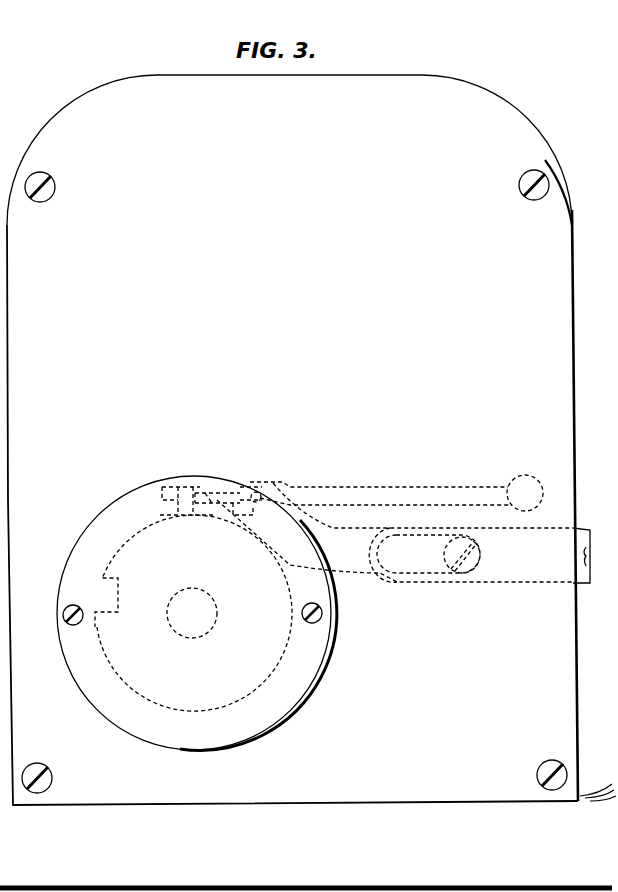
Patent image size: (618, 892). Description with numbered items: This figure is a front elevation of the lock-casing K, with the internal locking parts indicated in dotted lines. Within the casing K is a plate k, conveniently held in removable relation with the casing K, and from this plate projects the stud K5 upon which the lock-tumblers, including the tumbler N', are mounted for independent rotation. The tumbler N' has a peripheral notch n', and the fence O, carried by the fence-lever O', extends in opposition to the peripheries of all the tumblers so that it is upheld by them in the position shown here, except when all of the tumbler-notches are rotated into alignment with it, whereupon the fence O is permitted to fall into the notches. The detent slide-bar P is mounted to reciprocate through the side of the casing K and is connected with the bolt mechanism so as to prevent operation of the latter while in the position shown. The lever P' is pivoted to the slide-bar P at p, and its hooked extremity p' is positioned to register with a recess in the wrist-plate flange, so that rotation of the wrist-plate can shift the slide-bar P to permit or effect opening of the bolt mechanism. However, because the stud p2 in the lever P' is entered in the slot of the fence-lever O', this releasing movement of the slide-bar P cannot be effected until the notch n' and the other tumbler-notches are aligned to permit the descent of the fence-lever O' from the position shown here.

The casing K is at (311, 440).
The plate k is at (316, 661).
The tumbler N' is at (194, 627).
The peripheral notch n' is at (100, 602).
The stud K5 is at (213, 615).
The fence O is at (180, 503).
The hooked extremity p' is at (224, 521).
The stud p2 is at (248, 492).
The fence-lever O' is at (396, 485).
The lever P' is at (395, 532).
The pivot p is at (443, 554).
The detent slide-bar P is at (591, 555).